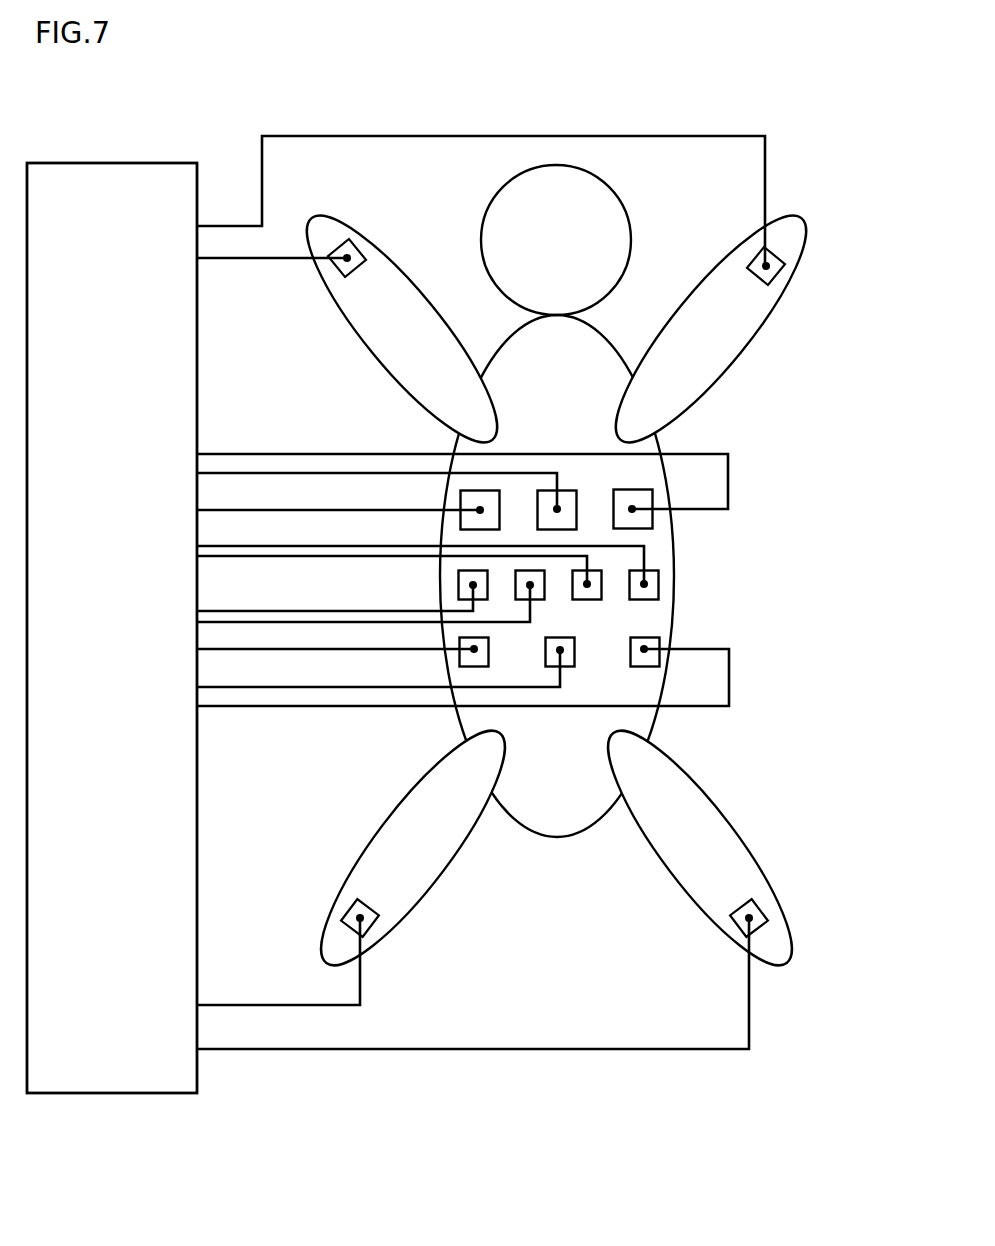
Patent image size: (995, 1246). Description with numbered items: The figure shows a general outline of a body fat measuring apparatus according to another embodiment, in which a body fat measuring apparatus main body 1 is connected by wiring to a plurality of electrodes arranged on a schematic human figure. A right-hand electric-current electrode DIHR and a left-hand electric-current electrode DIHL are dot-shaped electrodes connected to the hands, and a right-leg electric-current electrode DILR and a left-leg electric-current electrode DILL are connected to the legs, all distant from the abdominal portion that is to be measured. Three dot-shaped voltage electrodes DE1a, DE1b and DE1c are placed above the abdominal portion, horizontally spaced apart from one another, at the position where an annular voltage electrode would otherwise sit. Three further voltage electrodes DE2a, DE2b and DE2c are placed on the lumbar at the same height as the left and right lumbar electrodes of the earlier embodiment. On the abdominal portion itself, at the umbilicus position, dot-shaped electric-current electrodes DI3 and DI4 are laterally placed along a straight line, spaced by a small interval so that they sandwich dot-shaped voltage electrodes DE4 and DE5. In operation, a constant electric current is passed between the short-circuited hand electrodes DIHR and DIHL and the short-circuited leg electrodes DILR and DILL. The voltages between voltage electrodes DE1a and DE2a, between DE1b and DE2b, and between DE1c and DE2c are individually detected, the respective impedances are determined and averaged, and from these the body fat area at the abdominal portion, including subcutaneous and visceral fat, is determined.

The body fat measuring apparatus main body 1 is at (110, 160).
The right-hand electric-current electrode DIHR is at (357, 247).
The left-hand electric-current electrode DIHL is at (807, 220).
The right-leg electric-current electrode DILR is at (372, 928).
The left-leg electric-current electrode DILL is at (737, 929).
The voltage electrode DE1a is at (481, 491).
The voltage electrode DE1b is at (577, 486).
The voltage electrode DE1c is at (645, 522).
The electric-current electrode DI3 is at (459, 585).
The voltage electrode DE4 is at (517, 575).
The voltage electrode DE5 is at (603, 572).
The electric-current electrode DI4 is at (660, 585).
The voltage electrode DE2a is at (473, 667).
The voltage electrode DE2b is at (564, 668).
The voltage electrode DE2c is at (652, 662).